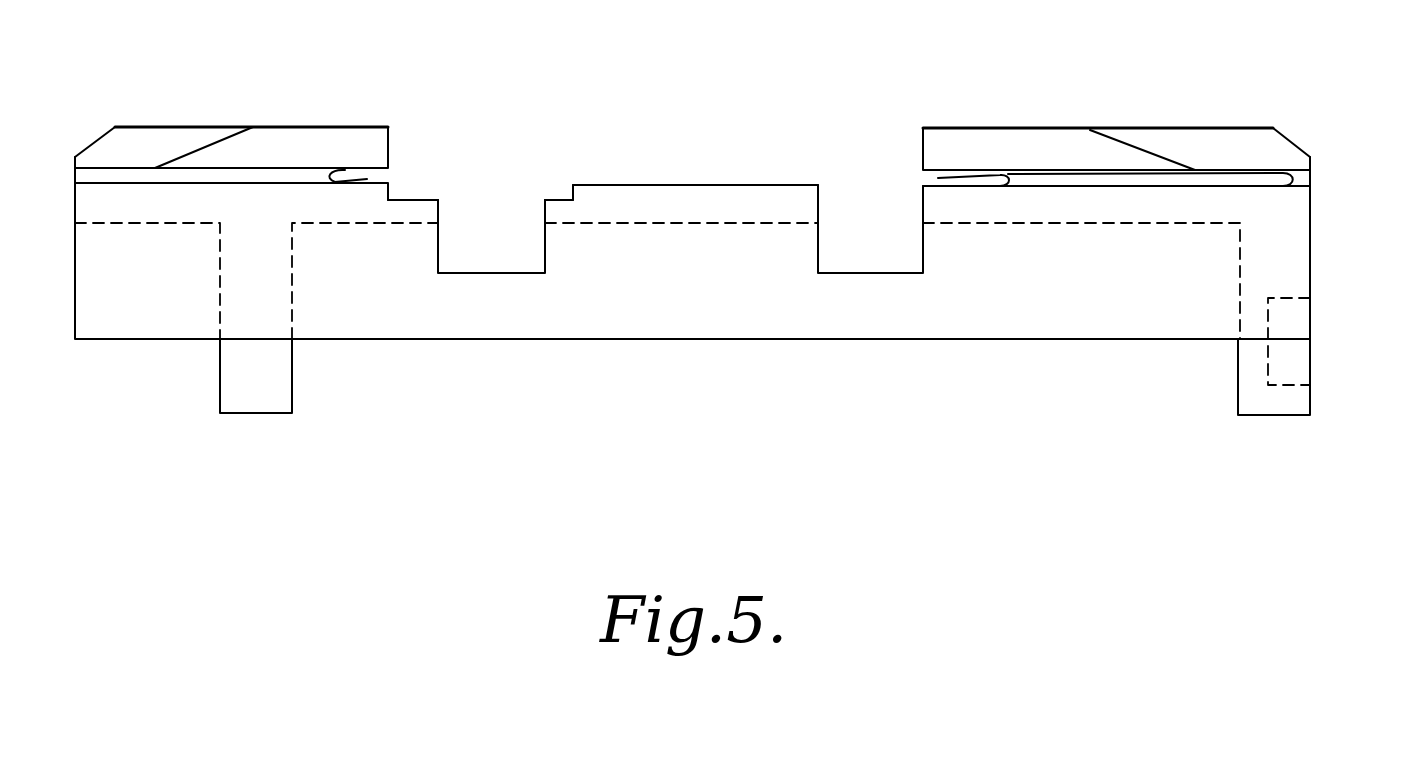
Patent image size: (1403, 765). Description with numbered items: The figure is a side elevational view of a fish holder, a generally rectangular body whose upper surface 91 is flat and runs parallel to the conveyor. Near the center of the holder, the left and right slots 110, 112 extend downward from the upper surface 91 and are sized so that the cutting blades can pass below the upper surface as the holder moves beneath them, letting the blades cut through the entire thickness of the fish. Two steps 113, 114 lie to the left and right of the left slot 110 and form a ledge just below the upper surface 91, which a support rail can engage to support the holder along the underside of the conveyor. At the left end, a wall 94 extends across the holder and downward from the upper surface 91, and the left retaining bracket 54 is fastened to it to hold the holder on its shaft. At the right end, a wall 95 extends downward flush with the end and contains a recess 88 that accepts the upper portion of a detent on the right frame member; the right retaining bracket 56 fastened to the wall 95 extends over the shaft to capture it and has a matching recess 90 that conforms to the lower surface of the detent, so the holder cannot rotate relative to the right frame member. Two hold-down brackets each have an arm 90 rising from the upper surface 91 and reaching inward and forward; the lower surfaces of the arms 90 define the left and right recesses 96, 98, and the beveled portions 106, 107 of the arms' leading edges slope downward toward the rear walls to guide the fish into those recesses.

The left retaining bracket 54 is at (237, 385).
The right retaining bracket 56 is at (1255, 387).
The recess 88 is at (1288, 313).
The arm 90 is at (143, 127).
The upper surface 91 is at (705, 185).
The wall 94 is at (238, 300).
The wall 95 is at (1313, 223).
The left recess 96 is at (367, 179).
The right recess 98 is at (938, 178).
The beveled portion of leading edge 106 is at (362, 153).
The beveled portion of leading edge 107 is at (943, 155).
The left slot 110 is at (495, 247).
The right slot 112 is at (873, 247).
The step 113 is at (413, 197).
The step 114 is at (557, 197).